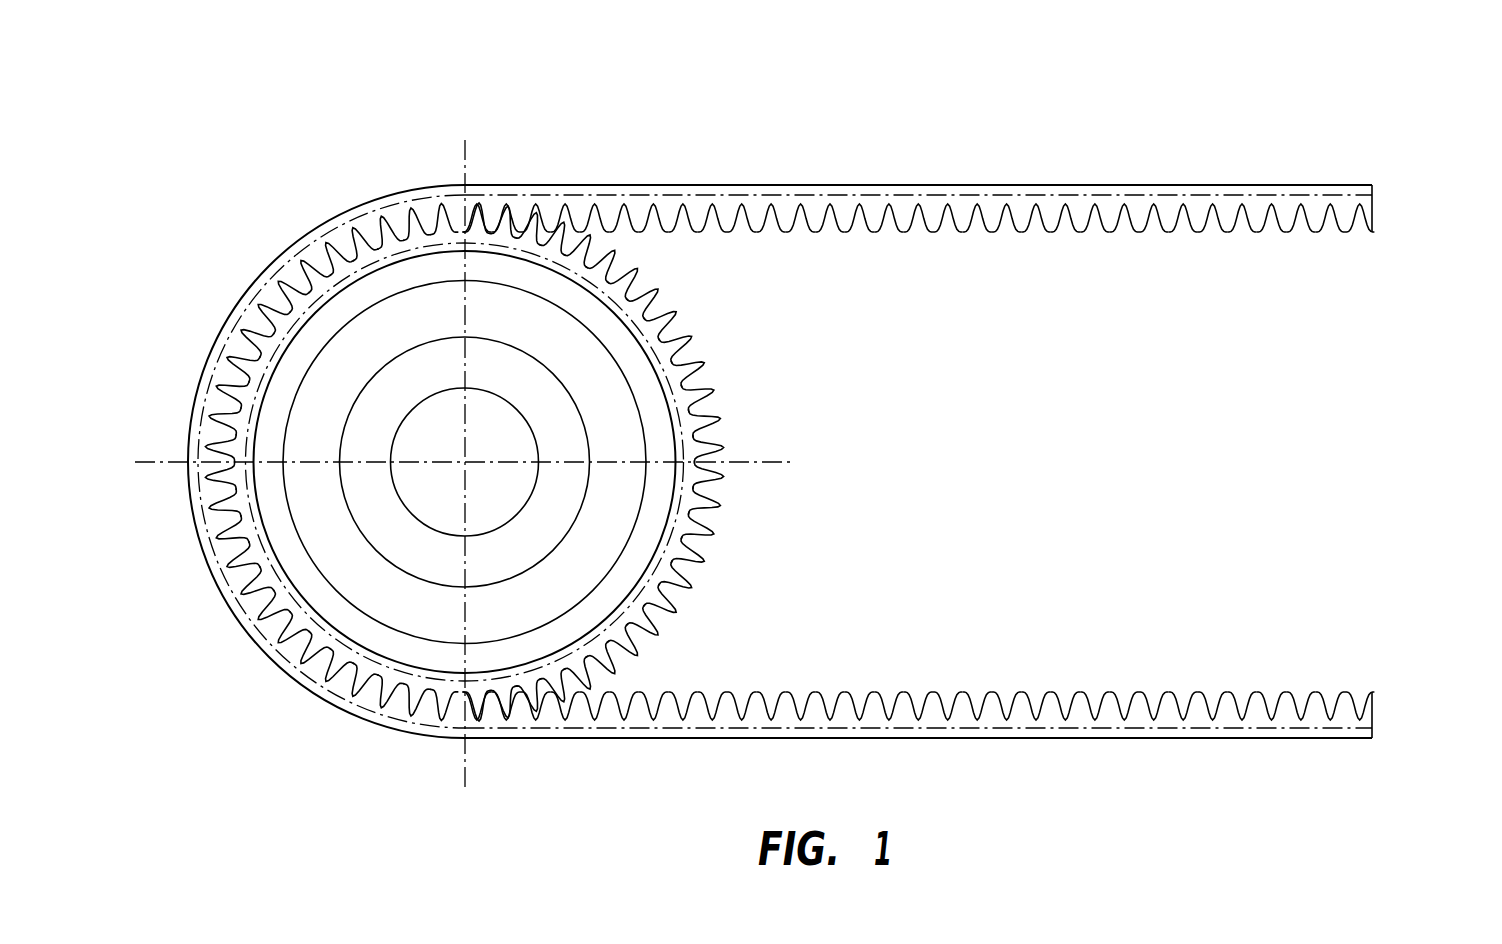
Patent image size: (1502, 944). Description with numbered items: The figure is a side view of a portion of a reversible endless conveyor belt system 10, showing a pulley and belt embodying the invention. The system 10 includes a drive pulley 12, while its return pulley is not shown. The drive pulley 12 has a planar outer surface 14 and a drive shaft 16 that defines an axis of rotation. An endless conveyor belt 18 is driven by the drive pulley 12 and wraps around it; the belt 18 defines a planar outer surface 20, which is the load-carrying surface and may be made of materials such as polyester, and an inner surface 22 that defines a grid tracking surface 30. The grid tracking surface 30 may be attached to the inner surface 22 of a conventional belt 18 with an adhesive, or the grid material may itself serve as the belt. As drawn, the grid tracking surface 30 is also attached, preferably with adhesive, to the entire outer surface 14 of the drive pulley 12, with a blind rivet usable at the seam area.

The reversible endless conveyor belt system 10 is at (785, 115).
The drive pulley 12 is at (283, 530).
The planar outer surface 14 is at (307, 607).
The drive shaft 16 is at (427, 410).
The endless conveyor belt 18 is at (1389, 725).
The planar outer surface 20 is at (992, 172).
The inner surface 22 is at (1137, 193).
The grid tracking surface 30 is at (1318, 222).